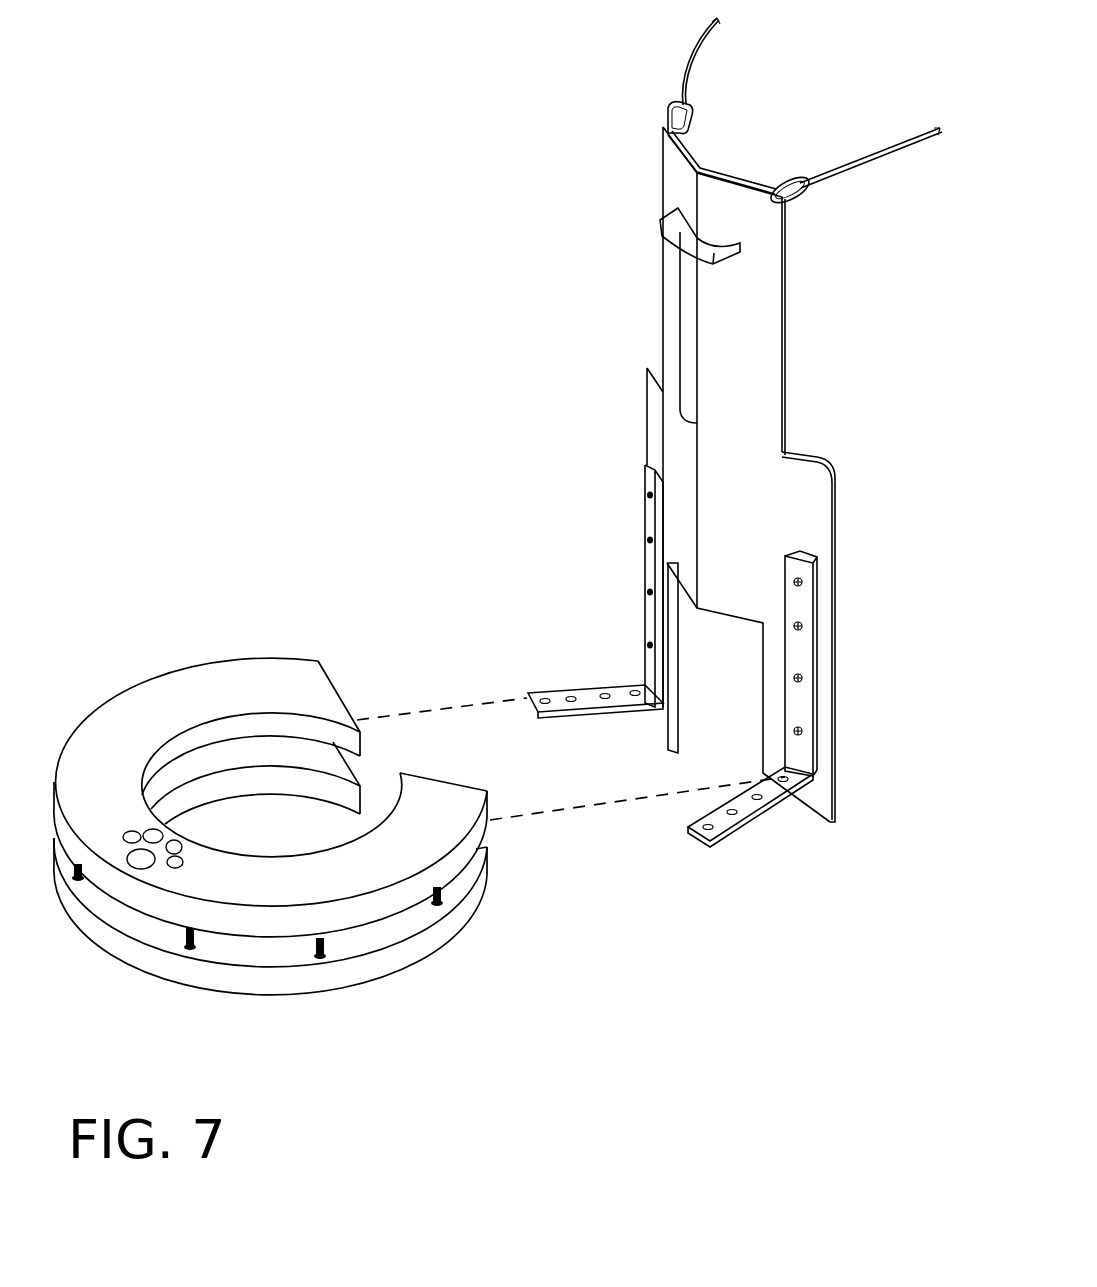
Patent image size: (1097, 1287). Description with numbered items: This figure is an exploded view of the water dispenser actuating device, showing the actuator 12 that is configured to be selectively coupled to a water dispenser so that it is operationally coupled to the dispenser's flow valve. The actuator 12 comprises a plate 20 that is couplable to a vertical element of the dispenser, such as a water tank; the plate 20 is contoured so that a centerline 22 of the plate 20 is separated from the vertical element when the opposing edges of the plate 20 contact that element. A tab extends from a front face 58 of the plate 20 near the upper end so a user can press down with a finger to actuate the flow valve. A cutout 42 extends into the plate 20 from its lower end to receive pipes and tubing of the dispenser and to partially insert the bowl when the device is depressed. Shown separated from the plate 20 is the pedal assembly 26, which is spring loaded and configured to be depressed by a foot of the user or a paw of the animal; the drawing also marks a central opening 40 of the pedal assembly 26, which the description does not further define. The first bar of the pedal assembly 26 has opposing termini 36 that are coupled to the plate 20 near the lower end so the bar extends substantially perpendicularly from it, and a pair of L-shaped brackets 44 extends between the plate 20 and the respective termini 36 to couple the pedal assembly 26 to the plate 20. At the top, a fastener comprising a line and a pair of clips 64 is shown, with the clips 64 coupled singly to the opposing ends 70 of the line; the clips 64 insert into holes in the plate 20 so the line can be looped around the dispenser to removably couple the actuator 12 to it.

The actuator 12 is at (619, 454).
The plate 20 is at (740, 392).
The centerline 22 is at (693, 472).
The pedal assembly 26 is at (178, 669).
The opposing termini 36 is at (434, 777).
The central aperture 40 is at (247, 812).
The cutout 42 is at (718, 682).
The brackets 44 is at (740, 792).
The front face 58 is at (763, 323).
The clips 64 is at (782, 187).
The opposing ends 70 is at (789, 187).